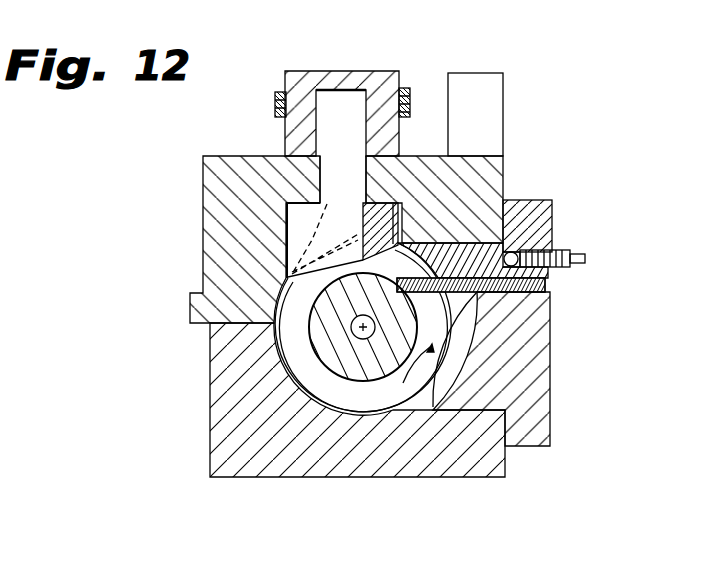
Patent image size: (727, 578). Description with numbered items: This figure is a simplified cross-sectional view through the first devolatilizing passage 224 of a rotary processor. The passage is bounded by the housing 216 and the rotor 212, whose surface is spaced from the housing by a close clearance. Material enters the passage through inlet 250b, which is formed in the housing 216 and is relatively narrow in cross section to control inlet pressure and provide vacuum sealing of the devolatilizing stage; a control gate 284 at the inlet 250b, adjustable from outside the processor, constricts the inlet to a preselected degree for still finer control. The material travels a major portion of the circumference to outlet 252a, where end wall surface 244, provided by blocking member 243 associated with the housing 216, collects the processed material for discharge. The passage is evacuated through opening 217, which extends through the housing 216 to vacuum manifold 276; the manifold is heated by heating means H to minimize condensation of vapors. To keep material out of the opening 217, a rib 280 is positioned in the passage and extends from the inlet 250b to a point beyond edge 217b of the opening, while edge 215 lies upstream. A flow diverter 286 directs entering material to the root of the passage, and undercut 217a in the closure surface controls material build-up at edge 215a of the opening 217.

The heating means H is at (276, 101).
The vacuum manifold 276 is at (297, 113).
The opening 217 is at (320, 186).
The edge of opening 215a is at (331, 196).
The rib 280 is at (292, 219).
The edge of opening 215 is at (364, 228).
The undercut 217a is at (286, 249).
The edge of opening 217b is at (284, 274).
The flow diverter 286 is at (386, 212).
The first devolatilizing passage 224 is at (288, 338).
The inlet 250b is at (438, 262).
The control gate 284 is at (520, 233).
The blocking member 243 is at (548, 286).
The end wall surface 244 is at (450, 312).
The outlet 252a is at (460, 352).
The housing 216 is at (233, 479).
The rotor 212 is at (357, 372).